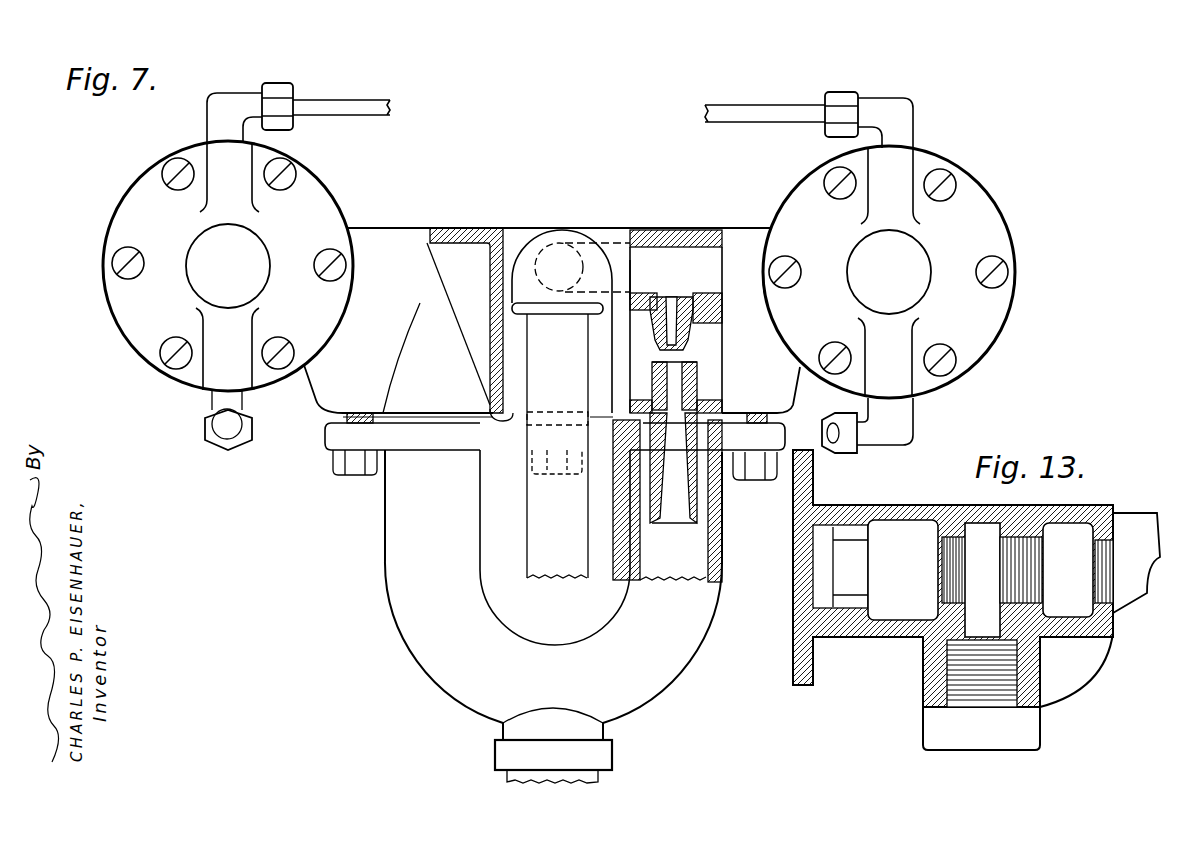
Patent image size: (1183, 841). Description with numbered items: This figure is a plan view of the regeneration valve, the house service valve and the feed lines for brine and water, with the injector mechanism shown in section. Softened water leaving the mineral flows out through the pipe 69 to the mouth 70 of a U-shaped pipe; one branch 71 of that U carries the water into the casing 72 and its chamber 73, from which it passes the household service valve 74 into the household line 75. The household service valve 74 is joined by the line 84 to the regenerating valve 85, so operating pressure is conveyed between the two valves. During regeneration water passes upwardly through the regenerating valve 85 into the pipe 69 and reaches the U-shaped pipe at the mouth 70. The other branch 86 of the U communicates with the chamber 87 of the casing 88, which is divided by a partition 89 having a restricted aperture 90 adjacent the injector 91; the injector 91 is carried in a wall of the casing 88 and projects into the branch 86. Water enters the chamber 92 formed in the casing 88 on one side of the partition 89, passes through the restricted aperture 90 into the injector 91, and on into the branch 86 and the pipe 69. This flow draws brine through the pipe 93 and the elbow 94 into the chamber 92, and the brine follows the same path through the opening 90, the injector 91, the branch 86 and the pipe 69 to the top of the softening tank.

The pipe 69 is at (595, 773).
The mouth 70 is at (500, 757).
The branch of the U-shaped pipe 71 is at (417, 630).
The casing 72 is at (485, 232).
The chamber 73 is at (457, 280).
The household service valve 74 is at (128, 196).
The household line 75 is at (370, 462).
The line 84 is at (340, 101).
The regenerating valve 85 is at (993, 222).
The branch of the U-shaped pipe 86 is at (668, 677).
The chamber 87 is at (713, 377).
The casing 88 is at (720, 230).
The partition 89 is at (650, 300).
The restricted aperture 90 is at (672, 336).
The injector 91 is at (683, 500).
The chamber 92 is at (682, 258).
The pipe 93 is at (565, 563).
The elbow 94 is at (565, 240).